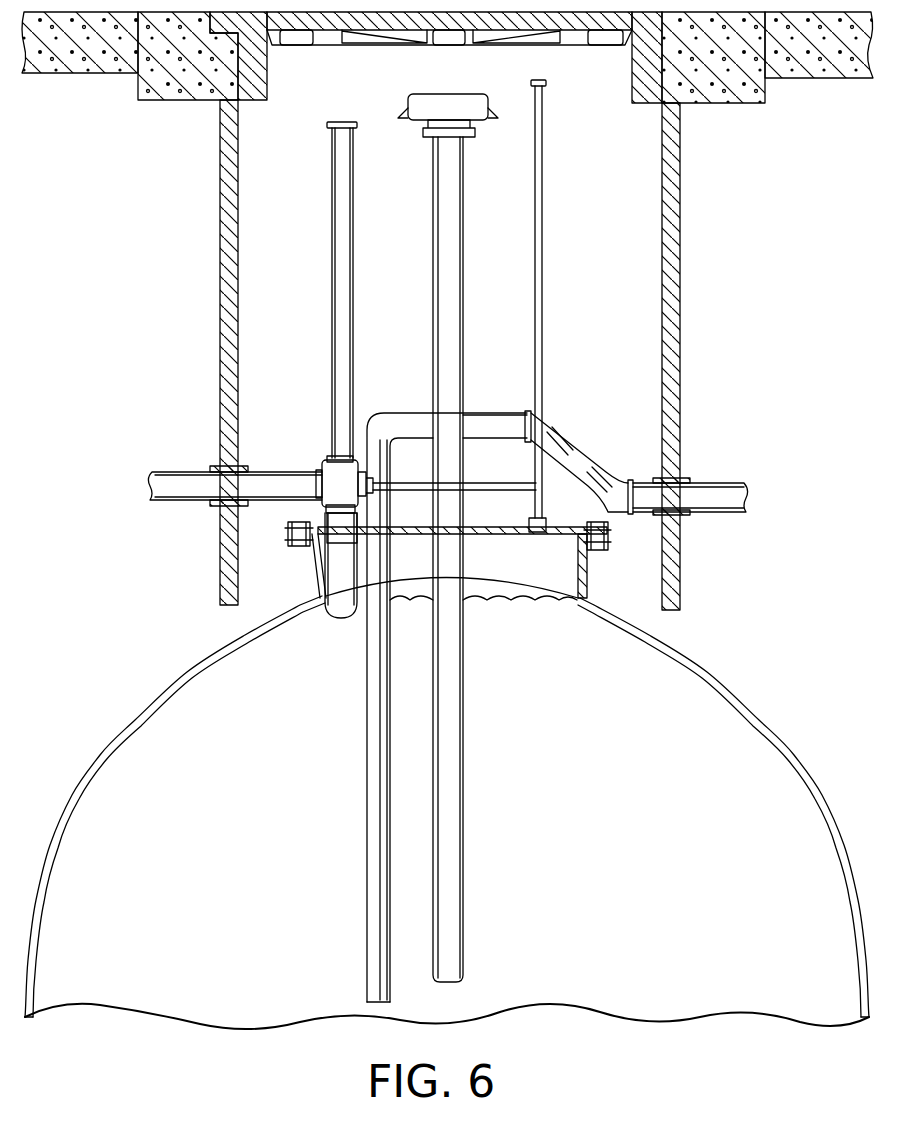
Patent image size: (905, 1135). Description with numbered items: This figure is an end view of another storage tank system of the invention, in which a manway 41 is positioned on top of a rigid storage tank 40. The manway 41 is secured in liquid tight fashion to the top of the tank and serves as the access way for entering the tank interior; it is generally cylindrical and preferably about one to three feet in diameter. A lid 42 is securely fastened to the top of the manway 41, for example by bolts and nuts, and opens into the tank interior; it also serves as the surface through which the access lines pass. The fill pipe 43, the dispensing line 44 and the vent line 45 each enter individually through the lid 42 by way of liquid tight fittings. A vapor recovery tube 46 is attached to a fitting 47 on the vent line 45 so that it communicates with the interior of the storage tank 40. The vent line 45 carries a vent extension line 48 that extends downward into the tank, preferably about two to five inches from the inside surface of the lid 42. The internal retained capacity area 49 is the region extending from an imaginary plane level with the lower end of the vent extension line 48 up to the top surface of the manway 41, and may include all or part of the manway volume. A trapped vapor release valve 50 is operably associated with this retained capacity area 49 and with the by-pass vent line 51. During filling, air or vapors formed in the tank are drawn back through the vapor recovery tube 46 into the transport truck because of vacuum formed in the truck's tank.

The rigid storage tank 40 is at (180, 672).
The manway 41 is at (587, 558).
The lid 42 is at (582, 503).
The fill pipe 43 is at (435, 214).
The dispensing line 44 is at (711, 487).
The vent line 45 is at (278, 488).
The vapor recovery tube 46 is at (347, 288).
The fitting 47 is at (332, 482).
The vent extension line 48 is at (342, 568).
The internal retained capacity area 49 is at (487, 573).
The trapped vapor release valve 50 is at (537, 538).
The by-pass vent line 51 is at (513, 488).